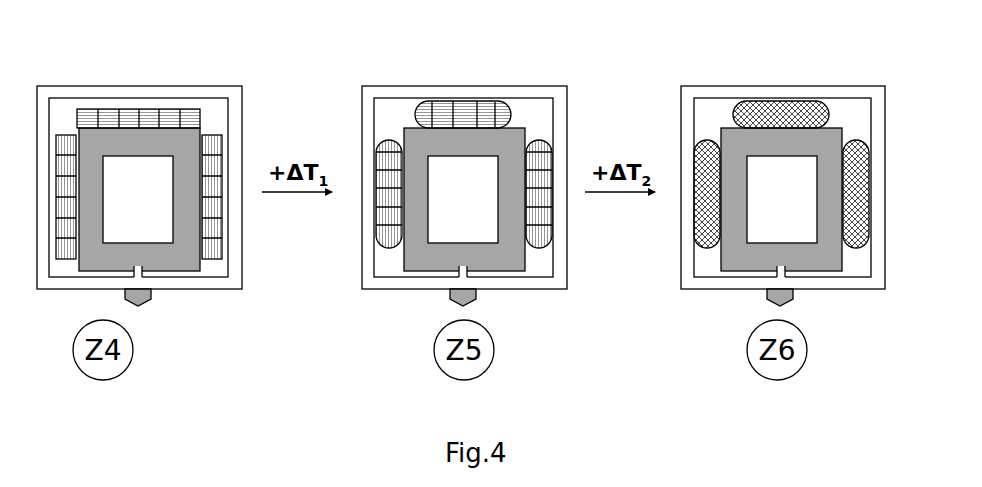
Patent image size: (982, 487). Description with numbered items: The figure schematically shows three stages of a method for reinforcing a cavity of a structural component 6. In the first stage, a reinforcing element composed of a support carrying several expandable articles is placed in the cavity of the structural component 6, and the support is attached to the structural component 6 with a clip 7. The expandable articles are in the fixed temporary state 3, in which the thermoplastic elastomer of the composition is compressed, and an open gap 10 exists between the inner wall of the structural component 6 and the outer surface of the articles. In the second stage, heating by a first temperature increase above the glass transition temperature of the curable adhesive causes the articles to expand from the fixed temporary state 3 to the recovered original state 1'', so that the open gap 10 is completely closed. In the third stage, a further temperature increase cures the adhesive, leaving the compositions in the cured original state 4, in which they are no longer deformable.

The structural component 6 is at (67, 92).
The open gap 10 is at (117, 107).
The fixed temporary state 3 is at (163, 113).
The clip 7 is at (144, 302).
The recovered original state 1'' is at (471, 77).
The cured original state 4 is at (777, 112).